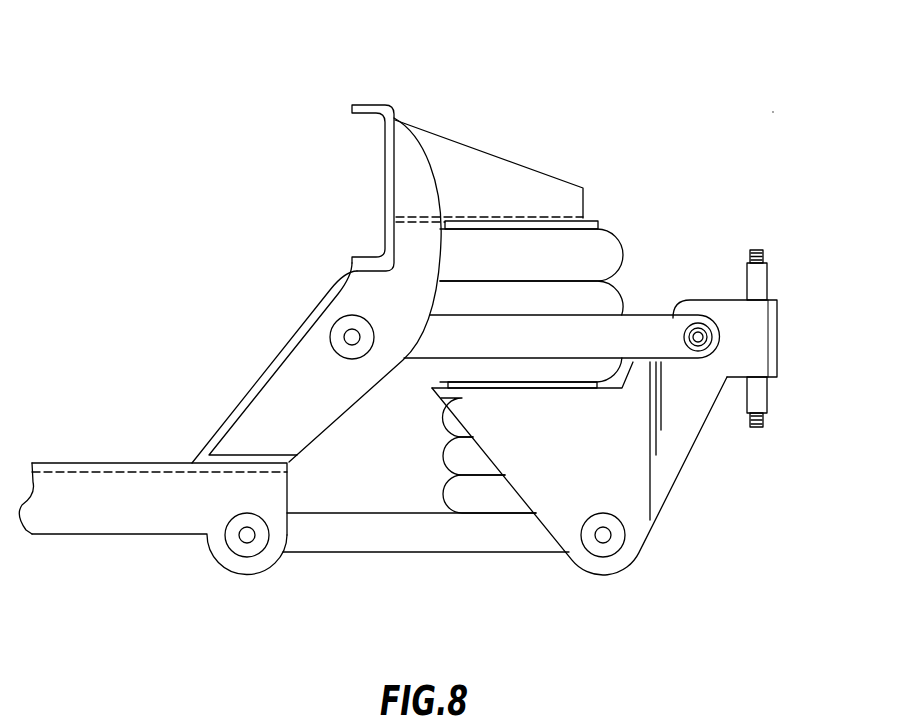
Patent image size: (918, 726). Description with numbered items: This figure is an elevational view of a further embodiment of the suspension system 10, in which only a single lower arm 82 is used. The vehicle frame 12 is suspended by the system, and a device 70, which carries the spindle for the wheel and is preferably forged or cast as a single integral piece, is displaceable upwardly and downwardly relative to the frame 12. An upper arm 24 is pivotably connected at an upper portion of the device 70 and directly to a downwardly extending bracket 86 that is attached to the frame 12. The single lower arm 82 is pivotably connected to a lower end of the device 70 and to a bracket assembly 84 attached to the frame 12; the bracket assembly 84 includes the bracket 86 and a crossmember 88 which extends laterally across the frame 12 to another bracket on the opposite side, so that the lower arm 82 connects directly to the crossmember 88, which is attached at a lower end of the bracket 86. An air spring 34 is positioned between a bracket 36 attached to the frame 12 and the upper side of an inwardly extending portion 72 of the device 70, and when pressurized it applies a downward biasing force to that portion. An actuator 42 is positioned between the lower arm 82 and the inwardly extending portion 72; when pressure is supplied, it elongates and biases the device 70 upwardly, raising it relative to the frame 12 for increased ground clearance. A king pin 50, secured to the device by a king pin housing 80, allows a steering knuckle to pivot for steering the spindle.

The suspension system 10 is at (773, 112).
The frame 12 is at (372, 105).
The upper arm 24 is at (634, 313).
The air spring 34 is at (623, 243).
The bracket 36 is at (508, 160).
The actuator 42 is at (445, 454).
The king pin 50 is at (767, 282).
The device 70 is at (687, 463).
The inwardly extending portion 72 is at (445, 402).
The king pin housing 80 is at (777, 340).
The lower arm 82 is at (427, 553).
The bracket assembly 84 is at (240, 397).
The bracket 86 is at (428, 160).
The crossmember 88 is at (97, 463).